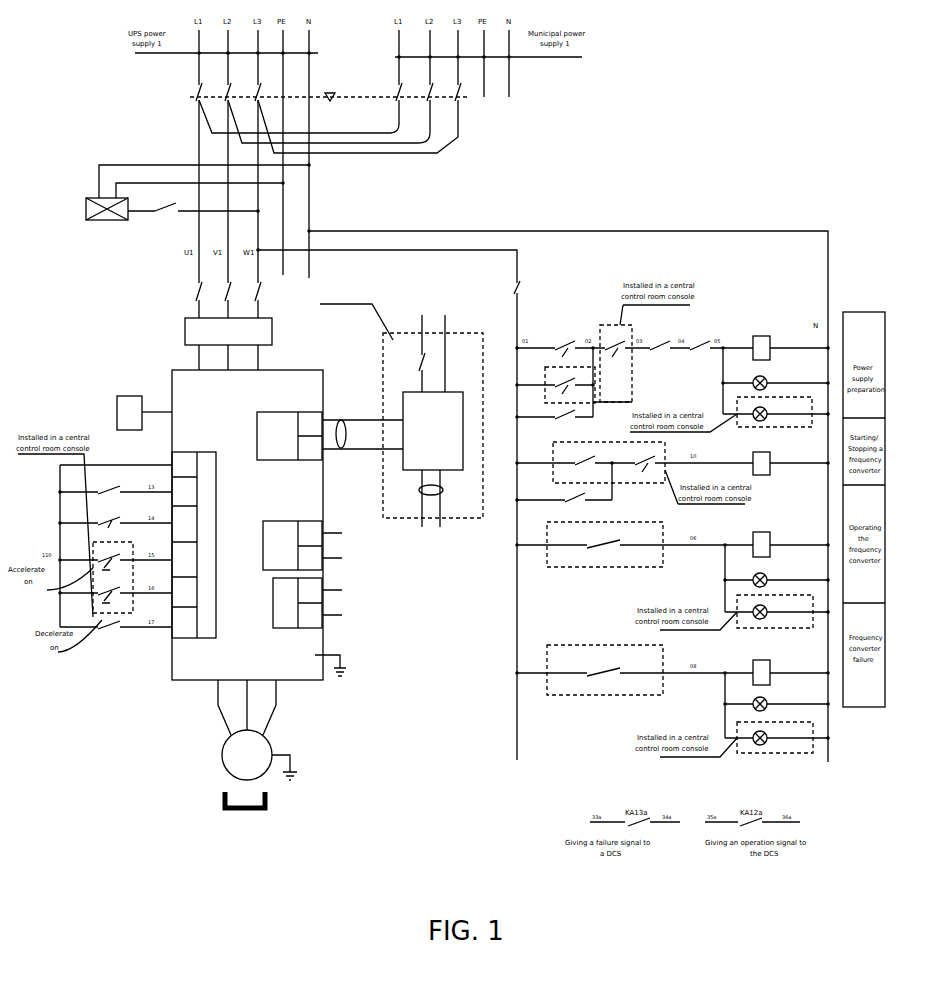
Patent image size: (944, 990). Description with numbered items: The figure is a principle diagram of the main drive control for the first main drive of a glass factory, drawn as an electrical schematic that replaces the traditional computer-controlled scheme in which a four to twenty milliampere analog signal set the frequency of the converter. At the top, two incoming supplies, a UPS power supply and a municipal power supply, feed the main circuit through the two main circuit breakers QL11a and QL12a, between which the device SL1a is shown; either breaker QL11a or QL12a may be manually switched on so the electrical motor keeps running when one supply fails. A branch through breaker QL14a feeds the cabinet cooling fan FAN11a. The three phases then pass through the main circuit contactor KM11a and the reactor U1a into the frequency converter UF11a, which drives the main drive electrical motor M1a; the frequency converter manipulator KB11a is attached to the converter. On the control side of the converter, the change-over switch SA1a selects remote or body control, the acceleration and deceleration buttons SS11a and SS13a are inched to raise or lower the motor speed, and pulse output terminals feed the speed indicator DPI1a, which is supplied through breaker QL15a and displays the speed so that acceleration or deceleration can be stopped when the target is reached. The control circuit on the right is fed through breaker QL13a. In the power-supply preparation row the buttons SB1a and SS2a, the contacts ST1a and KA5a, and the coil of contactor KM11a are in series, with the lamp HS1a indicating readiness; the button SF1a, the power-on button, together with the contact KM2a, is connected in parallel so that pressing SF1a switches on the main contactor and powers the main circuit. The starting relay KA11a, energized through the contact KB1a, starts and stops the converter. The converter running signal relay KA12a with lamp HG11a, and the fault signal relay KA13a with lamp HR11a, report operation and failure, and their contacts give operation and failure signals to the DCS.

The main circuit breaker QL11a is at (280, 93).
The main circuit breaker QL12a is at (418, 87).
The surge protector SL1a is at (328, 87).
The cabinet cooling fan FAN11a is at (93, 225).
The fan circuit breaker QL14a is at (164, 218).
The main circuit contactor KM11a is at (210, 291).
The input reactor U1a is at (228, 331).
The frequency converter UF11a is at (259, 525).
The frequency converter manipulator KB11a is at (144, 407).
The change-over switch SA1a is at (109, 518).
The stop manual operating button SS11a is at (113, 577).
The manual operating deceleration button SS13a is at (110, 591).
The main drive electrical motor M1a is at (246, 761).
The speed indicator DPI1a is at (400, 417).
The speed indicator circuit breaker QL15a is at (406, 358).
The control circuit breaker QL13a is at (530, 287).
The start button SB1a is at (564, 346).
The power-off manual operating button SS2a is at (616, 363).
The thermal relay contact ST1a is at (659, 342).
The auxiliary relay contact KA5a is at (699, 342).
The power-on manual operating button SF1a is at (570, 385).
The contactor auxiliary contact KM2a is at (563, 412).
The power supply preparation indicator lamp HS1a is at (774, 400).
The frequency converter starting relay KA11a is at (675, 462).
The relay contact KB1a is at (575, 495).
The frequency converter running signal relay KA12a is at (672, 544).
The operation indicator lamp HG11a is at (775, 599).
The frequency converter fault signal relay KA13a is at (672, 670).
The failure indicator lamp HR11a is at (775, 724).